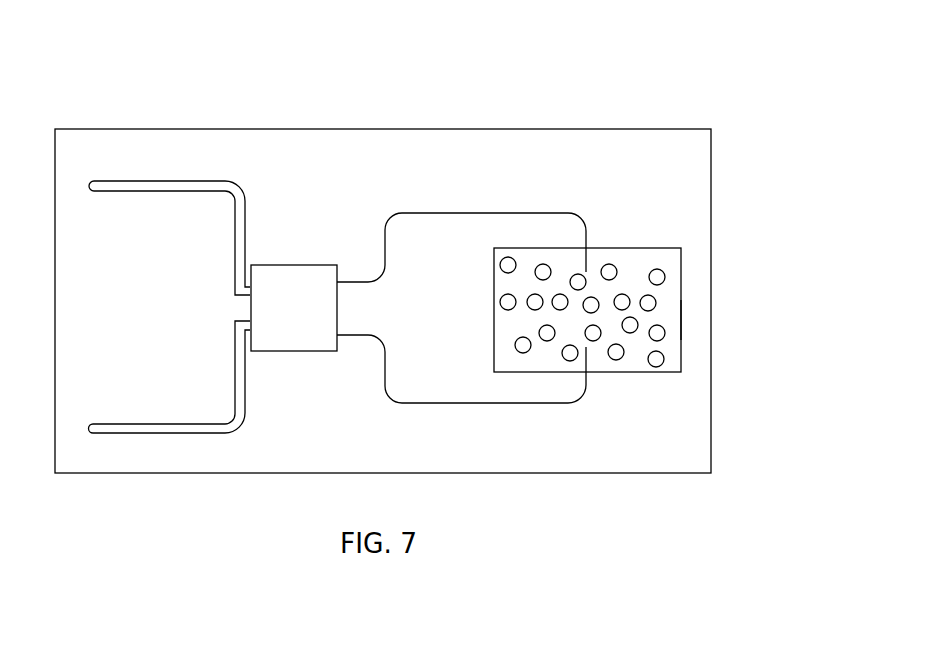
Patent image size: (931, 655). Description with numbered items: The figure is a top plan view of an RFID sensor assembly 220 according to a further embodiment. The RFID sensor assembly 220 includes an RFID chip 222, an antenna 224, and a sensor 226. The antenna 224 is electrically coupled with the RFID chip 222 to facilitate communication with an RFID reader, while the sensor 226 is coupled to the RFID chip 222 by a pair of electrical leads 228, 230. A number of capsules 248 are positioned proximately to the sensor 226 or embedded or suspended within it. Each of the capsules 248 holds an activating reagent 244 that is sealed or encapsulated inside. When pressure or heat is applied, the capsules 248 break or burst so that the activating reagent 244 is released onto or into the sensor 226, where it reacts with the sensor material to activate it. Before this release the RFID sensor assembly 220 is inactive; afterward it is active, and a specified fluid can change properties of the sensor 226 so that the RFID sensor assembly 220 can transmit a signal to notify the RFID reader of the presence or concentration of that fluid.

The RFID sensor assembly 220 is at (197, 98).
The RFID chip 222 is at (305, 292).
The antenna 224 is at (228, 215).
The sensor 226 is at (681, 317).
The electrical lead 228 is at (523, 210).
The electrical lead 230 is at (512, 413).
The activating reagent 244 is at (659, 275).
The capsules 248 is at (622, 294).